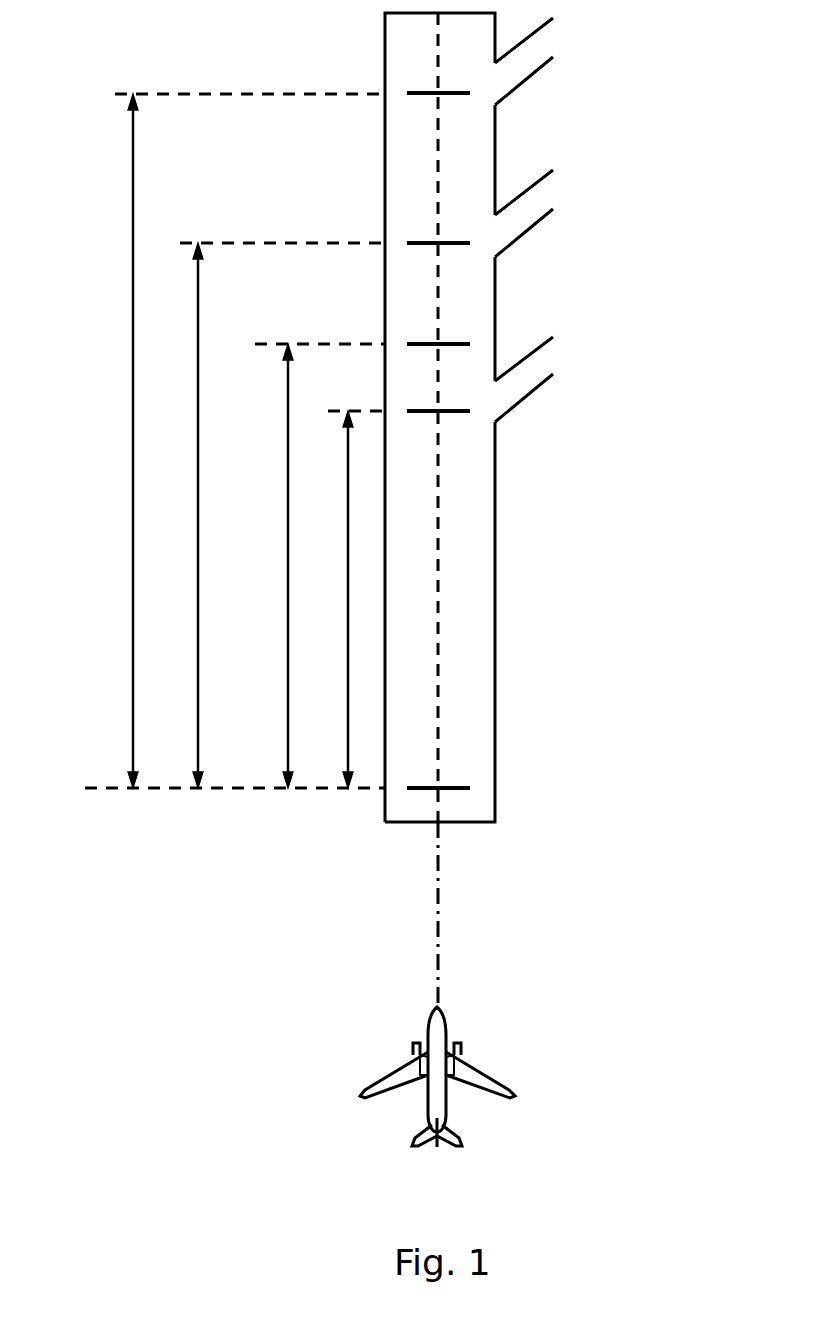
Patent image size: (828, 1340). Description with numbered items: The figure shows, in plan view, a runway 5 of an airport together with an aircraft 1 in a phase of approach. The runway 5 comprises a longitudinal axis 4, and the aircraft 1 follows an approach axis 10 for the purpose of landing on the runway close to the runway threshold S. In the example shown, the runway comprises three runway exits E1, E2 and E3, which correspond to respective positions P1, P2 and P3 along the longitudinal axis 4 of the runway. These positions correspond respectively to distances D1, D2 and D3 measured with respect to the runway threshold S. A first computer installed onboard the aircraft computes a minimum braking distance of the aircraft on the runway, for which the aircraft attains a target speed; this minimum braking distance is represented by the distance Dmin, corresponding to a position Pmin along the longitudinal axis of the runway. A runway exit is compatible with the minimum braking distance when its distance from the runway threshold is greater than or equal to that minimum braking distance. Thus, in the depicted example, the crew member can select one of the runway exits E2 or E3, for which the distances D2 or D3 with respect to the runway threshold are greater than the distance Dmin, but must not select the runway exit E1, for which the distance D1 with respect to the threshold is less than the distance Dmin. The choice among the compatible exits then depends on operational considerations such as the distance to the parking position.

The aircraft 1 is at (510, 1087).
The longitudinal axis 4 is at (438, 33).
The runway 5 is at (495, 607).
The approach axis 10 is at (438, 918).
The runway threshold S is at (455, 786).
The position P1 is at (450, 412).
The position P2 is at (452, 245).
The position P3 is at (450, 95).
The position Pmin is at (470, 344).
The runway exit E1 is at (560, 363).
The runway exit E2 is at (560, 192).
The runway exit E3 is at (563, 41).
The distance D1 is at (348, 484).
The distance D2 is at (198, 318).
The distance D3 is at (133, 175).
The minimum braking distance Dmin is at (288, 433).